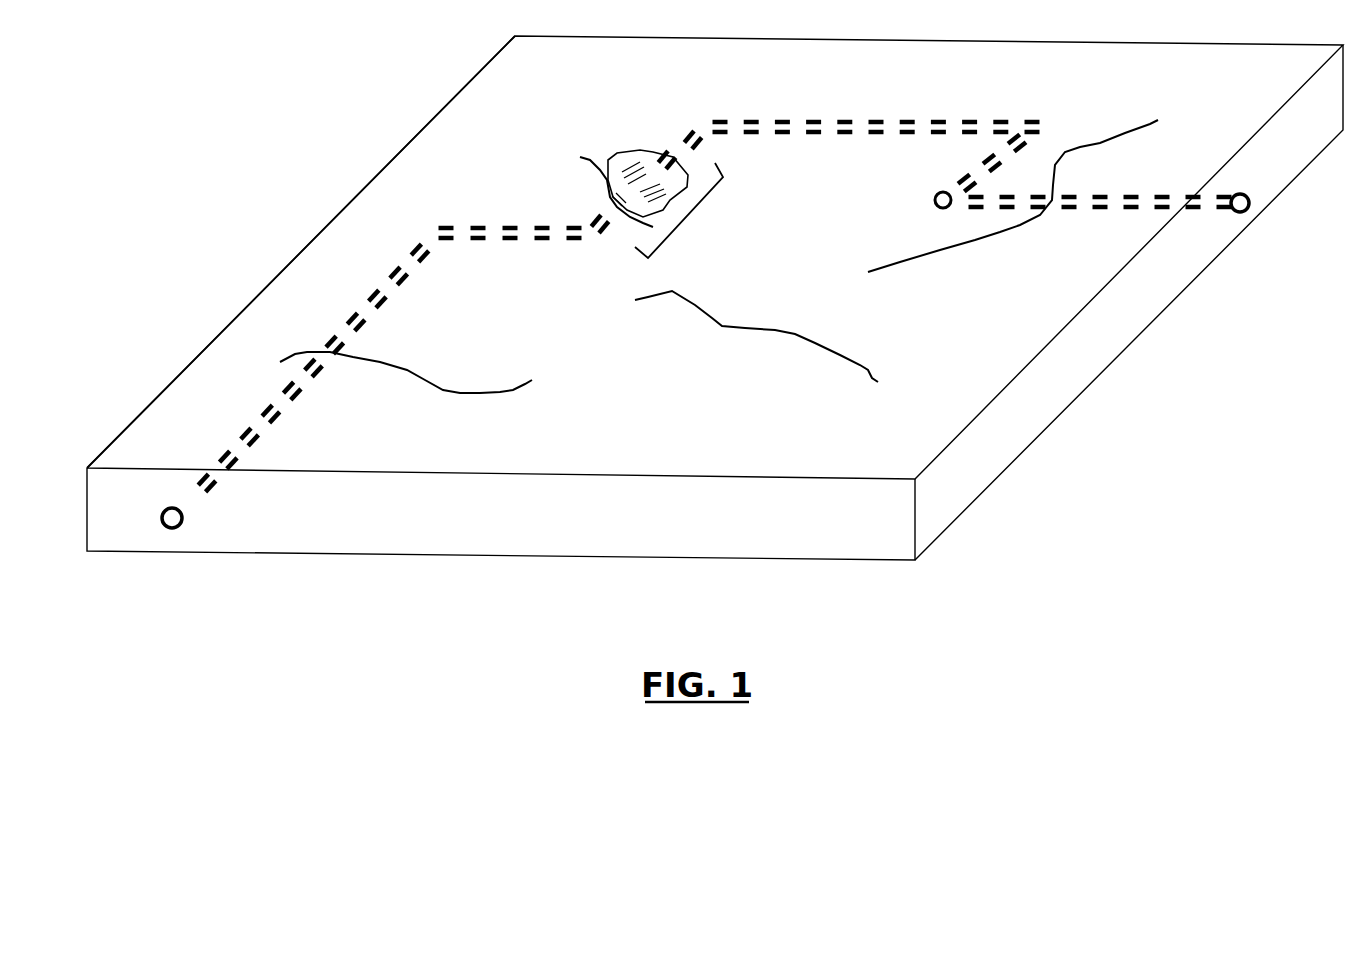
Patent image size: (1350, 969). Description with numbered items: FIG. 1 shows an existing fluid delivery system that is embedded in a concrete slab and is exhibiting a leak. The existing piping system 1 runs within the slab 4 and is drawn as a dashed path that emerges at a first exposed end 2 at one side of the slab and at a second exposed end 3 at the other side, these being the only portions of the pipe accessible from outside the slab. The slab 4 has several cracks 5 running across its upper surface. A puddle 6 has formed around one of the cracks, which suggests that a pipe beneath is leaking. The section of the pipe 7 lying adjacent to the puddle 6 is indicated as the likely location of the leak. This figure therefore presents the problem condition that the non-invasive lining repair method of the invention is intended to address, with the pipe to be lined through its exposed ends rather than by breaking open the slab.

The piping system 1 is at (358, 318).
The first exposed end 2 is at (1254, 208).
The second exposed end 3 is at (184, 527).
The slab 4 is at (433, 120).
The cracks 5 is at (588, 167).
The puddle 6 is at (647, 150).
The section of the pipe 7 is at (687, 220).